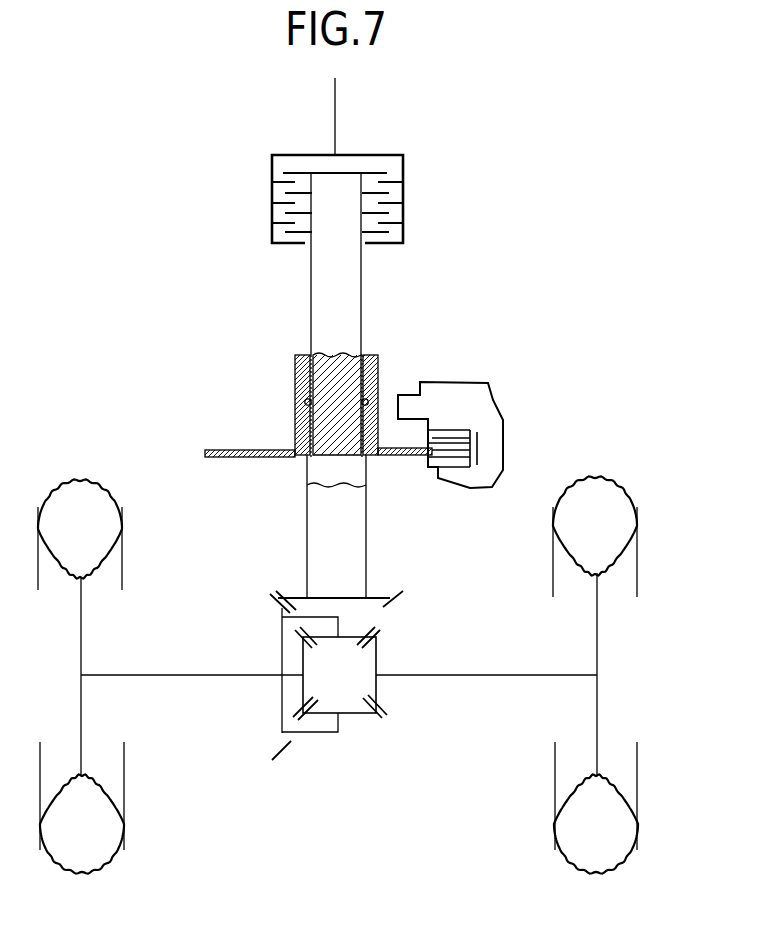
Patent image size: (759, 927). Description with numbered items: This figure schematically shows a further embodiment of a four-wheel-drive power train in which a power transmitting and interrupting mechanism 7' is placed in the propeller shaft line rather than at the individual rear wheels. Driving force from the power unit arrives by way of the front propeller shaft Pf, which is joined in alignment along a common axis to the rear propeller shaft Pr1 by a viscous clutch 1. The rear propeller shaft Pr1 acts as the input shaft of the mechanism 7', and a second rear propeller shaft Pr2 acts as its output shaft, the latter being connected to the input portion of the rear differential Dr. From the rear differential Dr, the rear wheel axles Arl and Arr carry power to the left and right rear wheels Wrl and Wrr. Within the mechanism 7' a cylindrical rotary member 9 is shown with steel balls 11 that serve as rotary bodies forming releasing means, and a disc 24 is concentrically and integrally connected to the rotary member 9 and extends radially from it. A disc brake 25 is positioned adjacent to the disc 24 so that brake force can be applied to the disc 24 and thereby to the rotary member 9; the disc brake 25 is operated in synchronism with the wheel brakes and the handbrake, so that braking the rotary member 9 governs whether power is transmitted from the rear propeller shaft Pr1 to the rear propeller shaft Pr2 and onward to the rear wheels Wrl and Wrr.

The front propeller shaft Pf is at (335, 110).
The viscous clutch 1 is at (424, 189).
The rear propeller shaft Pr1 is at (361, 283).
The power transmitting and interrupting mechanism 7' is at (296, 404).
The cylindrical rotary member 9 is at (378, 367).
The steel balls 11 is at (305, 402).
The disc 24 is at (252, 460).
The disc brake 25 is at (495, 428).
The rear propeller shaft Pr2 is at (366, 529).
The rear differential Dr is at (356, 754).
The rear wheel axle Arl is at (202, 675).
The rear wheel axle Arr is at (482, 675).
The left rear wheel Wrl is at (113, 522).
The right rear wheel Wrr is at (633, 515).